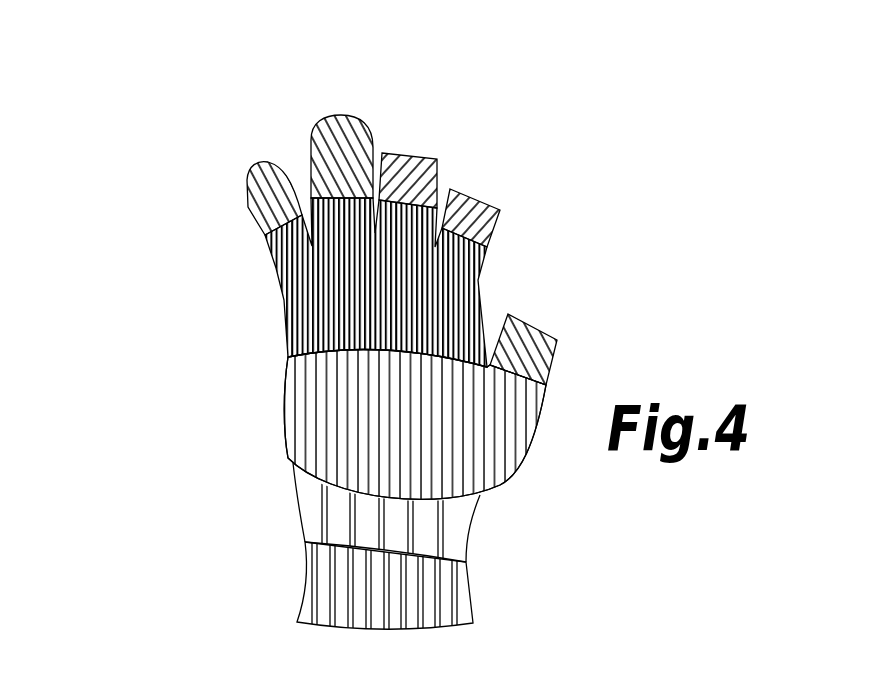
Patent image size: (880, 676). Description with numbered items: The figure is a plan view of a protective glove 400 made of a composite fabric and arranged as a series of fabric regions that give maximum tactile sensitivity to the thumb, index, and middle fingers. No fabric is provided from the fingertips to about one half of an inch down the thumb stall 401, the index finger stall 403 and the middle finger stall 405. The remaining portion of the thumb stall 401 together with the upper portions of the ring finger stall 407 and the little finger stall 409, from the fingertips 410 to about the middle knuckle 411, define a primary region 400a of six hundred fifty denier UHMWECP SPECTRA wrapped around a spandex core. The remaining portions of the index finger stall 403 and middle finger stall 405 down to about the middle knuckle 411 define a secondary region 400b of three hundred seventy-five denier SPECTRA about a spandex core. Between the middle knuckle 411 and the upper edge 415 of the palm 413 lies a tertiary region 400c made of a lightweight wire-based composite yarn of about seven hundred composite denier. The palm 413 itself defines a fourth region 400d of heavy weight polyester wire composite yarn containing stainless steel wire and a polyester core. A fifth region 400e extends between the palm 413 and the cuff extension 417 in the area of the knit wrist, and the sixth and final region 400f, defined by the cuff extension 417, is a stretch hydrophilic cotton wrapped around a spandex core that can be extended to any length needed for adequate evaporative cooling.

The glove 400 is at (532, 475).
The primary region 400a is at (338, 135).
The secondary region 400b is at (477, 200).
The tertiary region 400c is at (313, 303).
The fourth region 400d is at (307, 410).
The fifth region 400e is at (332, 510).
The sixth region 400f is at (325, 590).
The thumb stall 401 is at (552, 335).
The index finger stall 403 is at (497, 207).
The middle finger stall 405 is at (397, 153).
The ring finger stall 407 is at (333, 113).
The little finger stall 409 is at (243, 193).
The fingertips 410 is at (245, 173).
The middle knuckle 411 is at (265, 250).
The palm 413 is at (497, 495).
The upper edge of the palm 415 is at (342, 358).
The cuff extension 417 is at (473, 602).